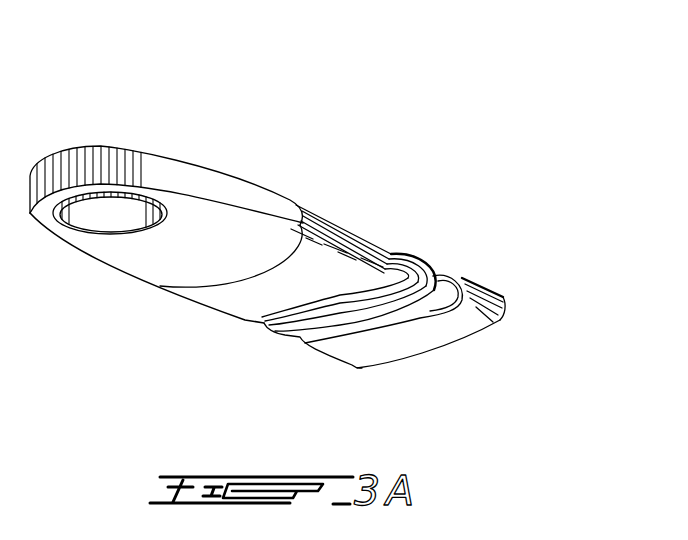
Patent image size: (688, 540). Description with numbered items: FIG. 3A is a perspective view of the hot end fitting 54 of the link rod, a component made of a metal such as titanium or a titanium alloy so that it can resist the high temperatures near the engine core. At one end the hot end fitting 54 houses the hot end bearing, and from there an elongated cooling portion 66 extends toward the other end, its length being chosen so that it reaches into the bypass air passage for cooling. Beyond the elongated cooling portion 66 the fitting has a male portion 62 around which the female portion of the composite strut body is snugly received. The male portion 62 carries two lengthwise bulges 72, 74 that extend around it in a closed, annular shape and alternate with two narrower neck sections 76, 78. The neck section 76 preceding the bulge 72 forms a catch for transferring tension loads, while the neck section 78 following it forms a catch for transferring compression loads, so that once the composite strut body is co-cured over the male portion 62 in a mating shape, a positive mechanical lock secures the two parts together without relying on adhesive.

The hot end fitting 54 is at (323, 235).
The male portion 62 is at (439, 285).
The elongated cooling portion 66 is at (248, 293).
The lengthwise bulge 72 is at (429, 259).
The lengthwise bulge 74 is at (490, 298).
The narrower neck section 76 is at (398, 266).
The narrower neck section 78 is at (447, 272).